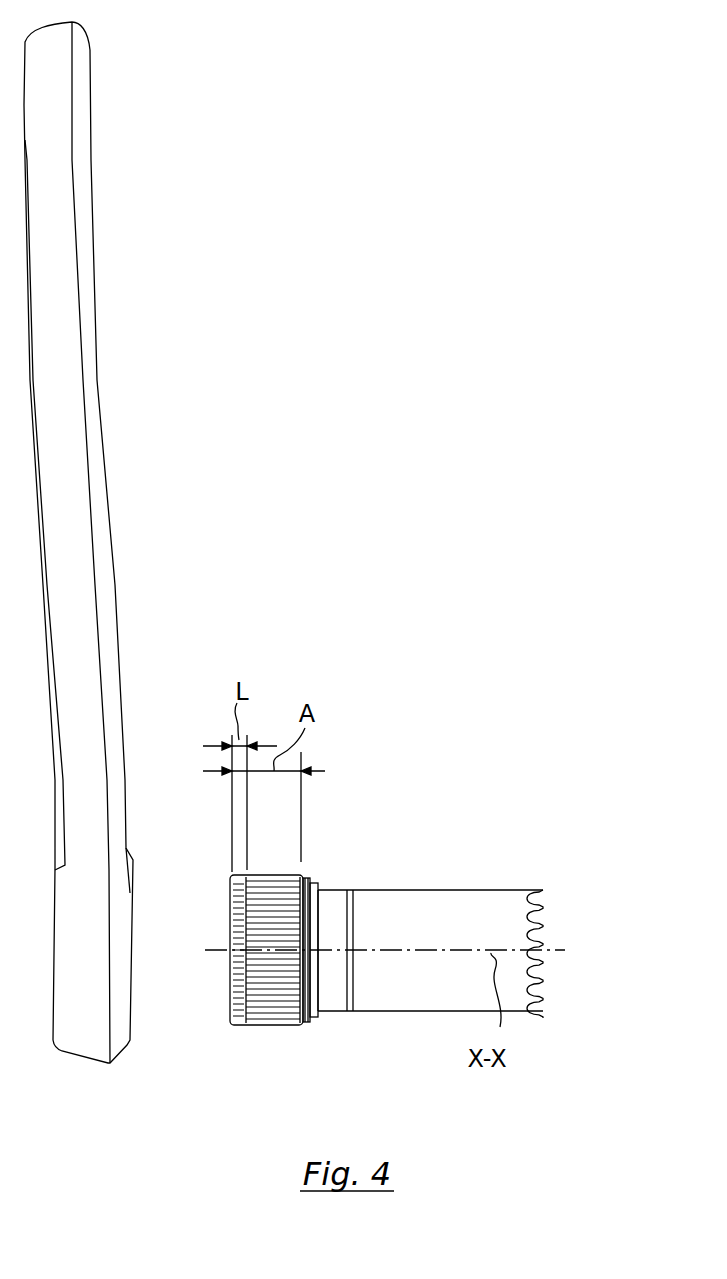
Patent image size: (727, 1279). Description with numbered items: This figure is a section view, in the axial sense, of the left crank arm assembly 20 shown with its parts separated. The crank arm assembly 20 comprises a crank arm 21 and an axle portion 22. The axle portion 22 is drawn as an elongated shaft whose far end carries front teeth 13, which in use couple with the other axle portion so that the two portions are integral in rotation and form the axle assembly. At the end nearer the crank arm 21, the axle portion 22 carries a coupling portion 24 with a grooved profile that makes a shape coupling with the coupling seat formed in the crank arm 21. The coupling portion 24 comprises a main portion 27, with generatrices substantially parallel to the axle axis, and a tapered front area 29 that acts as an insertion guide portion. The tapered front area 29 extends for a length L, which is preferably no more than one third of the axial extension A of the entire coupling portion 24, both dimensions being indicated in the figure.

The crank arm assembly 20 is at (225, 445).
The crank arm 21 is at (74, 288).
The axle portion 22 is at (448, 890).
The coupling portion 24 is at (271, 874).
The main portion 27 is at (282, 1028).
The tapered front area 29 is at (235, 1028).
The front teeth 13 is at (545, 898).